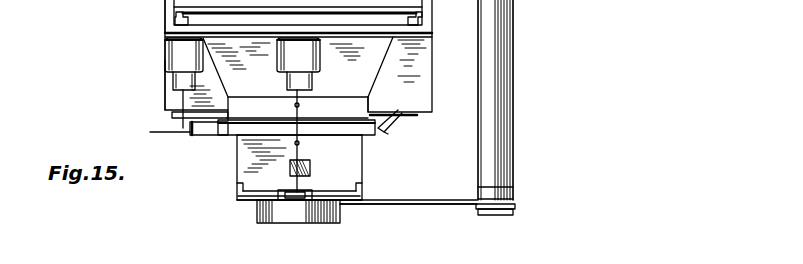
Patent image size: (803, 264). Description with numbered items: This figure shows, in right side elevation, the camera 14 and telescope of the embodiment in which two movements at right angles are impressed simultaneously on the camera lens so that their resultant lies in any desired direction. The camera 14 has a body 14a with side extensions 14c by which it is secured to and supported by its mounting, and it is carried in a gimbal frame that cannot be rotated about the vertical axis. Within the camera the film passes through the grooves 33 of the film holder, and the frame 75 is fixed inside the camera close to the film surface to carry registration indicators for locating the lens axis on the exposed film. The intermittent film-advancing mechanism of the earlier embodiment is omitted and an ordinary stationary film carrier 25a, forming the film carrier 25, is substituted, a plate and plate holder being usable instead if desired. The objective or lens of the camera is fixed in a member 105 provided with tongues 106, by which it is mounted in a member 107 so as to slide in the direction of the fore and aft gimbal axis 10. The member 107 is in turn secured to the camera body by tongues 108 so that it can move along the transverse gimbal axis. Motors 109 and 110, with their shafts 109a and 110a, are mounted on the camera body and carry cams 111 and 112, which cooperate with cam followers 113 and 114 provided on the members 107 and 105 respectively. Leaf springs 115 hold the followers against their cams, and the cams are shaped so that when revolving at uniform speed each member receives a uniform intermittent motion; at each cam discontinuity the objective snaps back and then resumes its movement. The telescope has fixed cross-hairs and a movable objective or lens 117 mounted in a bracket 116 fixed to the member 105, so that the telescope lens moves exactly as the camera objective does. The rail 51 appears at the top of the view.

The fore and aft gimbal axis 10 is at (309, 253).
The camera 14 is at (408, 72).
The camera body 14a is at (323, 202).
The side extensions 14c is at (170, 102).
The film carrier 25 is at (420, 8).
The stationary film carrier 25a is at (176, 13).
The grooves 33 is at (422, 15).
The rail 51 is at (117, 4).
The frame 75 is at (265, 13).
The lens member 105 is at (352, 196).
The tongues 106 is at (363, 187).
The sliding member 107 is at (299, 153).
The tongues 108 is at (262, 115).
The motor 109 is at (173, 58).
The motor shaft 109a is at (178, 80).
The motor 110 is at (318, 70).
The plunger rod 110a is at (303, 88).
The cam 111 is at (160, 127).
The cam 112 is at (300, 193).
The cam follower 113 is at (203, 135).
The cam follower 114 is at (300, 195).
The leaf springs 115 is at (388, 124).
The bracket 116 is at (458, 205).
The telescope objective 117 is at (503, 215).